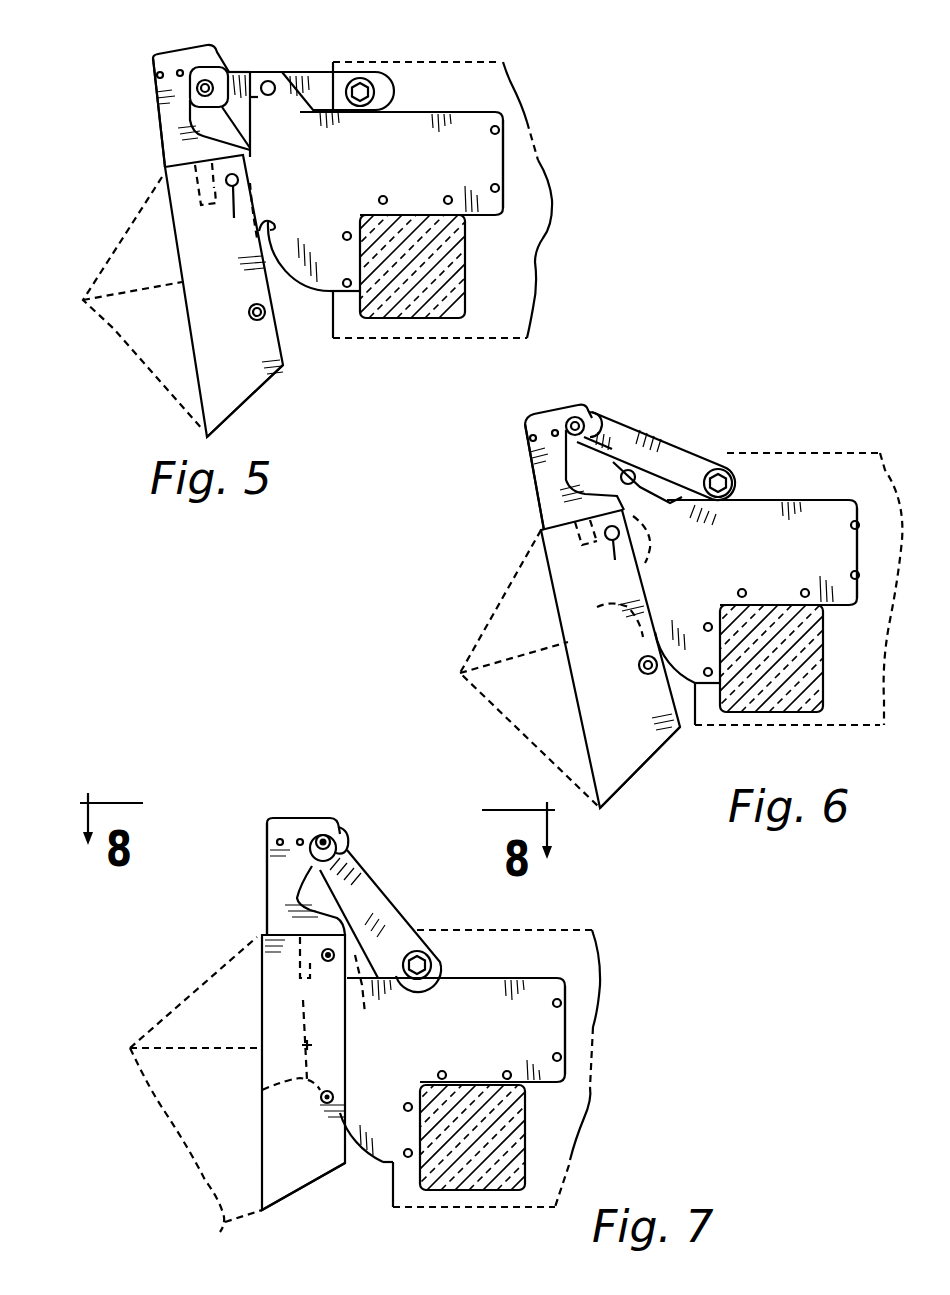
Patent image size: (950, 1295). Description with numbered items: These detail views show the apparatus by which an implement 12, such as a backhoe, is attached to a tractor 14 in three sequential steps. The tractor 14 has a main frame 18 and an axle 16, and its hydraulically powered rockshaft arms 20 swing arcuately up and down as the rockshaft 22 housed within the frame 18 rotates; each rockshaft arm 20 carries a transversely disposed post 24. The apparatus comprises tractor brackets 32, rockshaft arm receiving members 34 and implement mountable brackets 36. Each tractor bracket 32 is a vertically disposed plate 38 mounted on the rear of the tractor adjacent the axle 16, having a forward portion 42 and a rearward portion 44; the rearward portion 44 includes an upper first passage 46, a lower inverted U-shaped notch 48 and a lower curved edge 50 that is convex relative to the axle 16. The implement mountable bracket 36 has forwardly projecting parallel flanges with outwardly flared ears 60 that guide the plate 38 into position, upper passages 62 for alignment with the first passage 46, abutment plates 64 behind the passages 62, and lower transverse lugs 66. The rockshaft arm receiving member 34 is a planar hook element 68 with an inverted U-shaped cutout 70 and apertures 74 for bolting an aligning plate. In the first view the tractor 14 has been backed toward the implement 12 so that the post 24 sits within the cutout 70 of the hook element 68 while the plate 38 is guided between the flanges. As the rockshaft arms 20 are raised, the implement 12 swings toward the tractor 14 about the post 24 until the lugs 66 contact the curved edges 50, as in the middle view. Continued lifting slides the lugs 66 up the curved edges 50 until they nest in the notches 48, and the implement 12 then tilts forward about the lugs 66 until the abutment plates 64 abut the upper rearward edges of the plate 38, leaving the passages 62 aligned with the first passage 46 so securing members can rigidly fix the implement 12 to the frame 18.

In FIG. 5, the implement 12 is at (152, 363).
In FIG. 6, the implement 12 is at (499, 678).
In FIG. 7, the implement 12 is at (185, 1084).
In FIG. 5, the tractor 14 is at (530, 256).
In FIG. 6, the tractor 14 is at (881, 699).
In FIG. 7, the tractor 14 is at (581, 1107).
In FIG. 5, the axle 16 is at (466, 284).
In FIG. 6, the axle 16 is at (820, 668).
In FIG. 7, the axle 16 is at (538, 1160).
In FIG. 5, the main frame 18 is at (440, 62).
In FIG. 6, the main frame 18 is at (830, 455).
In FIG. 7, the main frame 18 is at (478, 925).
In FIG. 5, the rockshaft arms 20 is at (320, 72).
In FIG. 6, the rockshaft arms 20 is at (642, 436).
In FIG. 7, the rockshaft arms 20 is at (383, 897).
In FIG. 5, the rockshaft 22 is at (362, 90).
In FIG. 6, the rockshaft 22 is at (720, 470).
In FIG. 7, the rockshaft 22 is at (425, 980).
In FIG. 5, the posts 24 is at (212, 104).
In FIG. 6, the posts 24 is at (592, 445).
In FIG. 7, the posts 24 is at (355, 860).
In FIG. 5, the tractor brackets 32 is at (453, 125).
In FIG. 6, the tractor brackets 32 is at (832, 502).
In FIG. 7, the tractor brackets 32 is at (499, 976).
In FIG. 5, the rockshaft arm receiving members 34 is at (164, 121).
In FIG. 6, the rockshaft arm receiving members 34 is at (536, 467).
In FIG. 7, the rockshaft arm receiving members 34 is at (277, 821).
In FIG. 5, the implement mountable brackets 36 is at (262, 380).
In FIG. 6, the implement mountable brackets 36 is at (645, 745).
In FIG. 7, the implement mountable brackets 36 is at (288, 1185).
In FIG. 5, the plate 38 is at (410, 163).
In FIG. 6, the plate 38 is at (780, 558).
In FIG. 7, the plate 38 is at (470, 1045).
In FIG. 5, the forward portion 42 is at (502, 168).
In FIG. 6, the forward portion 42 is at (858, 536).
In FIG. 7, the forward portion 42 is at (553, 1032).
In FIG. 5, the rearward portion 44 is at (252, 155).
In FIG. 6, the rearward portion 44 is at (575, 624).
In FIG. 7, the rearward portion 44 is at (280, 1045).
In FIG. 5, the first passage 46 is at (272, 80).
In FIG. 6, the first passage 46 is at (638, 468).
In FIG. 5, the inverted U-shaped notch 48 is at (277, 226).
In FIG. 6, the inverted U-shaped notch 48 is at (630, 650).
In FIG. 7, the inverted U-shaped notch 48 is at (262, 1090).
In FIG. 5, the curved edge 50 is at (290, 292).
In FIG. 6, the curved edge 50 is at (668, 640).
In FIG. 7, the curved edge 50 is at (360, 1140).
In FIG. 5, the outwardly flared ears 60 is at (262, 190).
In FIG. 6, the outwardly flared ears 60 is at (652, 548).
In FIG. 7, the outwardly flared ears 60 is at (365, 1015).
In FIG. 5, the passages 62 is at (233, 217).
In FIG. 6, the passages 62 is at (615, 560).
In FIG. 5, the abutment plates 64 is at (190, 190).
In FIG. 6, the abutment plates 64 is at (545, 551).
In FIG. 7, the abutment plates 64 is at (262, 972).
In FIG. 5, the lugs 66 is at (249, 312).
In FIG. 6, the lugs 66 is at (643, 669).
In FIG. 7, the lugs 66 is at (323, 1103).
In FIG. 5, the hook elements 68 is at (151, 69).
In FIG. 6, the hook elements 68 is at (536, 481).
In FIG. 7, the hook elements 68 is at (267, 862).
In FIG. 5, the inverted U-shaped cutouts 70 is at (216, 72).
In FIG. 6, the inverted U-shaped cutouts 70 is at (583, 418).
In FIG. 7, the inverted U-shaped cutouts 70 is at (335, 828).
In FIG. 7, the apertures 74 is at (329, 962).